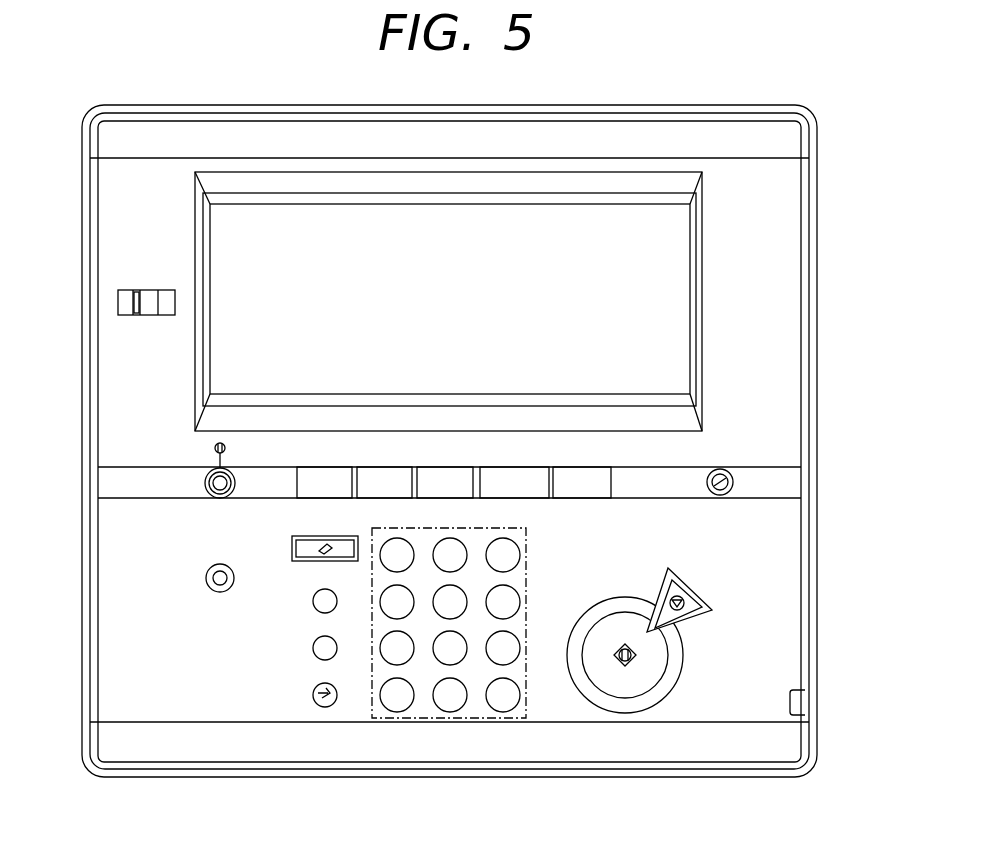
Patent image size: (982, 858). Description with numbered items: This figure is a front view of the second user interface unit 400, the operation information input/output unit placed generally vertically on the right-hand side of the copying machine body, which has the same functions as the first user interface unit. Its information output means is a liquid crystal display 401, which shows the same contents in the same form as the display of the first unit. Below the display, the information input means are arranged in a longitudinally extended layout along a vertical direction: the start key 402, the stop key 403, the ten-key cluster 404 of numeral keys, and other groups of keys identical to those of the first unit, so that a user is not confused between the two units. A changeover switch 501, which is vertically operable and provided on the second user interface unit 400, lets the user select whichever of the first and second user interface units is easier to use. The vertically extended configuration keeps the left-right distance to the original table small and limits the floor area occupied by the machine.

The second user interface unit 400 is at (760, 242).
The liquid crystal display 401 is at (660, 340).
The start key 402 is at (622, 680).
The stop key 403 is at (693, 603).
The ten-key cluster 404 is at (434, 715).
The changeover switch 501 is at (148, 315).